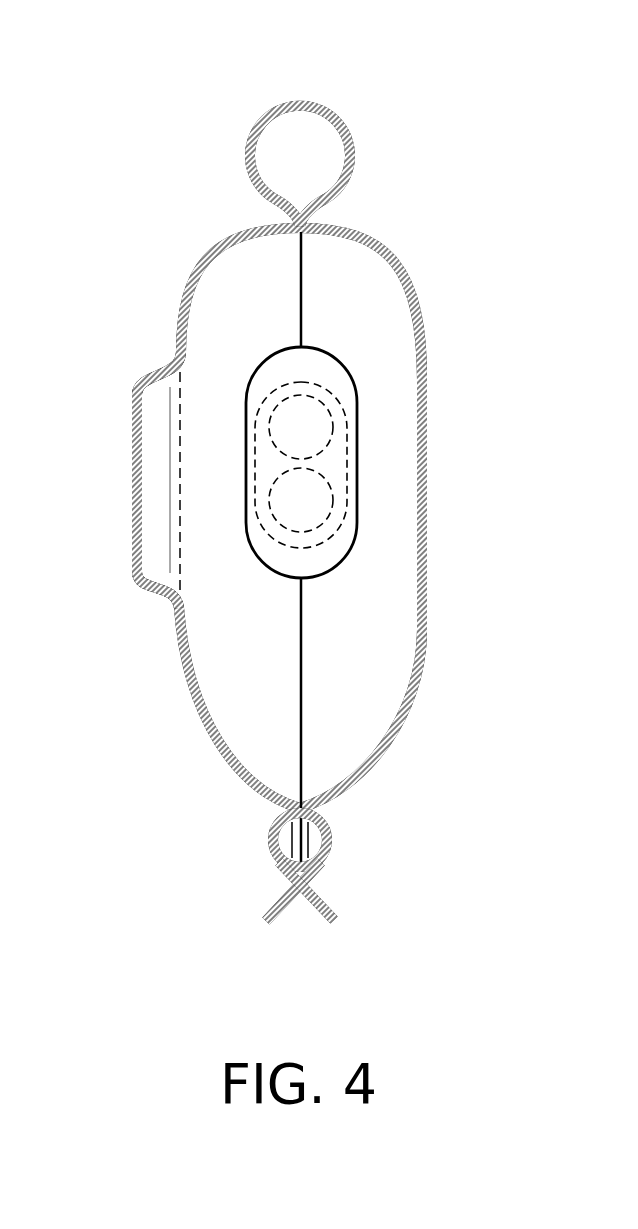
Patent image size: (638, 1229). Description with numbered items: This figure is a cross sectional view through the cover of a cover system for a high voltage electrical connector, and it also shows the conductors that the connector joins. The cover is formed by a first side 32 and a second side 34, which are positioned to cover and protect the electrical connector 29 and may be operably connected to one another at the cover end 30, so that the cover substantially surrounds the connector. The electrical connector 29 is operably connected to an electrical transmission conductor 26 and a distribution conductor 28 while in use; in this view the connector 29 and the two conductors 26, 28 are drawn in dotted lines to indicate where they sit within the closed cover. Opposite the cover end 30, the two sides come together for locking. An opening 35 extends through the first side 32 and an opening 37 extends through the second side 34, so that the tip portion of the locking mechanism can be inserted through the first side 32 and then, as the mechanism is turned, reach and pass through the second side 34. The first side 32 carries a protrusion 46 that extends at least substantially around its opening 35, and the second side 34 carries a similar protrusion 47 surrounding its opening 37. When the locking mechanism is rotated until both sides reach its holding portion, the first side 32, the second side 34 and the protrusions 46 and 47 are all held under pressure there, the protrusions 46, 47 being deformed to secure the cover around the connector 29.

The electrical transmission conductor 26 is at (292, 422).
The distribution conductor 28 is at (310, 510).
The electrical connector 29 is at (263, 515).
The cover end 30 is at (353, 140).
The first side 32 is at (132, 482).
The second side 34 is at (428, 463).
The opening 35 is at (268, 847).
The opening 37 is at (330, 843).
The protrusion 46 is at (273, 818).
The protrusion 47 is at (327, 868).